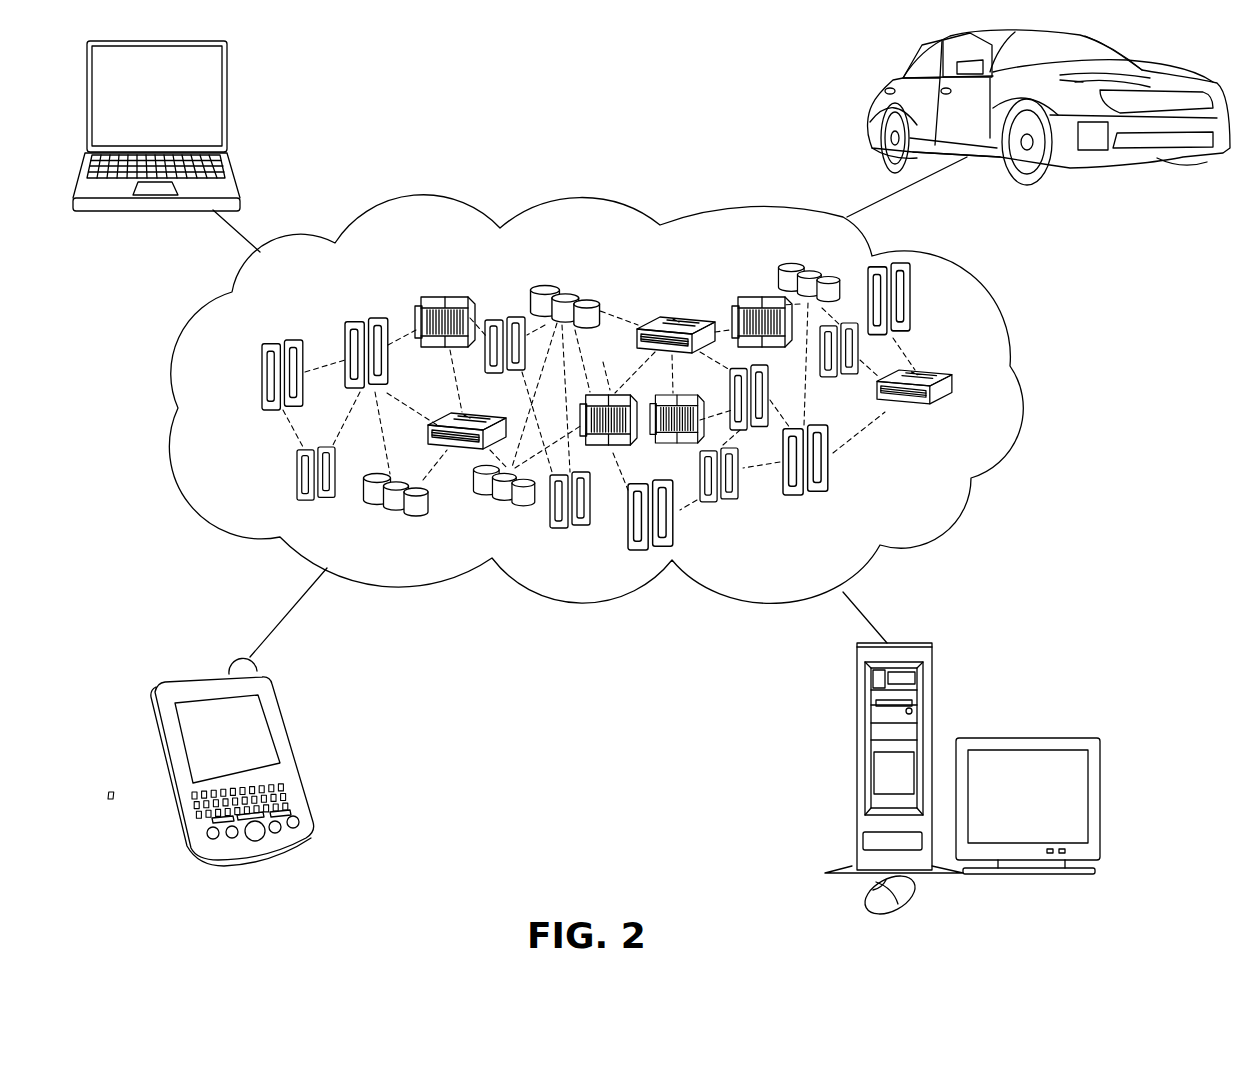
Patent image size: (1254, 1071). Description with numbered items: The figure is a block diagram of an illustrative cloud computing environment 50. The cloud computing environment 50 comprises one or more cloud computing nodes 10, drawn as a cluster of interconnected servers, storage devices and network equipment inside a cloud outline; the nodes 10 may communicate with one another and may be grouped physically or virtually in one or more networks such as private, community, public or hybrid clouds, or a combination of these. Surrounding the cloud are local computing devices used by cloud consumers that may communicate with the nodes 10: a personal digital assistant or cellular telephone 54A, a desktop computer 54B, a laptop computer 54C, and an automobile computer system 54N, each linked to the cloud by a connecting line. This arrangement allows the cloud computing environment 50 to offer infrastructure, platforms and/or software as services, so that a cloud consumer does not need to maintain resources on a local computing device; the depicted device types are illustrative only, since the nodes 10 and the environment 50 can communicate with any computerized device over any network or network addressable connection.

The cloud computing nodes 10 is at (930, 487).
The cloud computing environment 50 is at (1025, 388).
The personal digital assistant (PDA) or cellular telephone 54A is at (283, 718).
The desktop computer 54B is at (855, 702).
The laptop computer 54C is at (228, 79).
The automobile computer system 54N is at (872, 98).